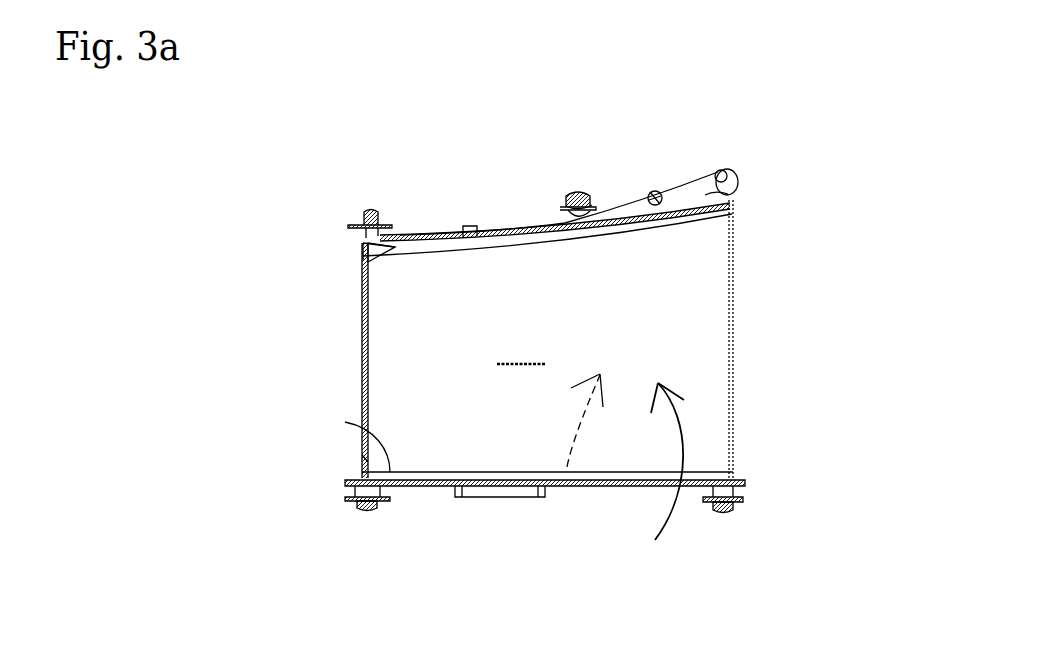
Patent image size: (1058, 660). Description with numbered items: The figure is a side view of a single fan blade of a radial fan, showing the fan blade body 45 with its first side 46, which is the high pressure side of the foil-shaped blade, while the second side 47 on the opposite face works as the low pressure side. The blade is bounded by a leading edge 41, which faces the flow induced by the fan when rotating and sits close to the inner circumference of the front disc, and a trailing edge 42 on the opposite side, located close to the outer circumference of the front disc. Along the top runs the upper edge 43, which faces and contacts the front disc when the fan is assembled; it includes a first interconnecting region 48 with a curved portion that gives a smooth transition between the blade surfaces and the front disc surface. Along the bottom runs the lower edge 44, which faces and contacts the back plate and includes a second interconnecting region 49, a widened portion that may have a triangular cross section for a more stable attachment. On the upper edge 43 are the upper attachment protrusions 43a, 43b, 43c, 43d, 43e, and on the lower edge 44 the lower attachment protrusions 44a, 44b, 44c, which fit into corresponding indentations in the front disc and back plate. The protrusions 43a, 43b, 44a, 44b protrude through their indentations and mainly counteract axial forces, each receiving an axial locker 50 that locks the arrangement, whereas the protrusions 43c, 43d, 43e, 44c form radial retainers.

The leading edge 41 is at (733, 368).
The trailing edge 42 is at (362, 352).
The upper edge 43 is at (733, 193).
The upper attachment protrusion 43a is at (378, 212).
The upper attachment protrusion 43b is at (595, 186).
The upper attachment protrusion 43c is at (477, 228).
The upper attachment protrusion 43d is at (670, 190).
The upper attachment protrusion 43e is at (740, 173).
The lower edge 44 is at (405, 486).
The lower attachment protrusion 44a is at (357, 507).
The lower attachment protrusion 44b is at (737, 503).
The lower attachment protrusion 44c is at (462, 494).
The fan blade body 45 is at (519, 342).
The first side 46 is at (568, 487).
The second side 47 is at (660, 486).
The first interconnecting region 48 is at (363, 265).
The second interconnecting region 49 is at (345, 422).
The axial locker 50 is at (358, 222).